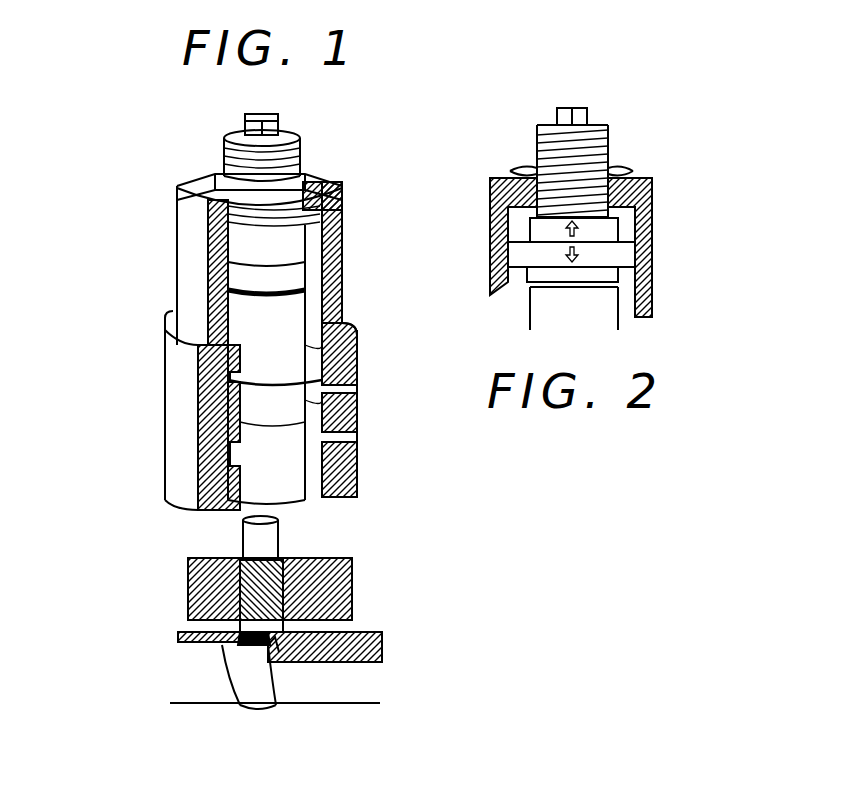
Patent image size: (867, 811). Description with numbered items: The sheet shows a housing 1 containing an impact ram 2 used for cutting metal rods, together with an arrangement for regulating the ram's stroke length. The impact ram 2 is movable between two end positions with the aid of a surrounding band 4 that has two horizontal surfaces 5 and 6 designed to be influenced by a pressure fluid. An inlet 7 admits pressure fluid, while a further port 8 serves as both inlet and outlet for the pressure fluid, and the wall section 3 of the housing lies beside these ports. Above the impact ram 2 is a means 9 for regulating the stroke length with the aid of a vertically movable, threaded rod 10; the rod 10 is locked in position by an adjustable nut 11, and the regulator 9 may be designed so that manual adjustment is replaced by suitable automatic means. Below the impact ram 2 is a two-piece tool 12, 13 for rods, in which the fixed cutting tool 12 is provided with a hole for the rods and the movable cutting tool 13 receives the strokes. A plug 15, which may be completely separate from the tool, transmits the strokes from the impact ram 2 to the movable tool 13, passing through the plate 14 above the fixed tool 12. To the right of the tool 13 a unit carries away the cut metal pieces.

In FIG. 1, the housing 1 is at (333, 227).
In FIG. 1, the impact ram 2 is at (293, 317).
In FIG. 1, the housing wall section 3 is at (358, 373).
In FIG. 1, the surrounding band 4 is at (305, 408).
In FIG. 1, the horizontal surface 5 is at (235, 380).
In FIG. 1, the horizontal surface 6 is at (253, 433).
In FIG. 1, the inlet 7 is at (320, 389).
In FIG. 1, the inlet and outlet 8 is at (320, 438).
In FIG. 2, the stroke-length regulator 9 is at (618, 255).
In FIG. 2, the threaded rod 10 is at (600, 143).
In FIG. 2, the adjustable nut 11 is at (627, 168).
In FIG. 1, the fixed cutting tool 12 is at (207, 577).
In FIG. 1, the movable cutting tool 13 is at (248, 687).
In FIG. 1, the plate 14 is at (340, 580).
In FIG. 1, the plug 15 is at (275, 538).